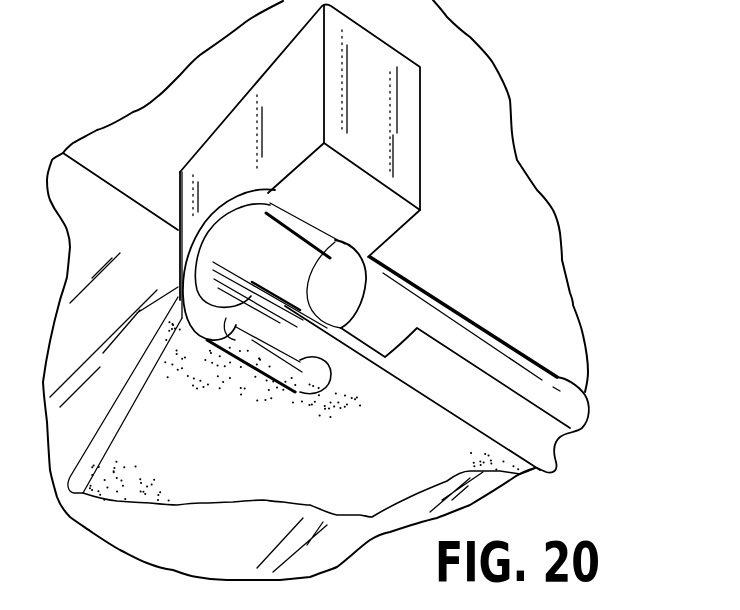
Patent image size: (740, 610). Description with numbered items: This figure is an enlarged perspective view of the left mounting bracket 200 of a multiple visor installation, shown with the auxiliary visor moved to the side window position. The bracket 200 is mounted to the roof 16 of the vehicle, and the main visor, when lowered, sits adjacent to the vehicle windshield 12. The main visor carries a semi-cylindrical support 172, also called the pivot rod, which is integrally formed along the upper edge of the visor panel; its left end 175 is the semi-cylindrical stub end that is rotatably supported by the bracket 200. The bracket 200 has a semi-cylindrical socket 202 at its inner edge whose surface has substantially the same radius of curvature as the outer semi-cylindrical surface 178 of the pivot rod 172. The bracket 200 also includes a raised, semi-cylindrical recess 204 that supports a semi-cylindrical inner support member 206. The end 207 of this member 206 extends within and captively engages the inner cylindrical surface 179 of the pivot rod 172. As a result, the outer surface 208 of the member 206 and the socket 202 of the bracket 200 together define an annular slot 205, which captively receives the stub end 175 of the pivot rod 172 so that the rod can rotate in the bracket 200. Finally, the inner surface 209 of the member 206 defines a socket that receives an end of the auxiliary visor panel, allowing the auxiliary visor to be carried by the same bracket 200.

The vehicle windshield 12 is at (250, 550).
The roof 16 is at (478, 152).
The semi-cylindrical support 172 is at (472, 347).
The left end 175 is at (380, 262).
The outer semi-cylindrical surface 178 is at (457, 337).
The inner cylindrical surface 179 is at (352, 299).
The left mounting bracket 200 is at (215, 137).
The semi-cylindrical socket 202 is at (289, 392).
The raised semi-cylindrical recess 204 is at (264, 370).
The annular slot 205 is at (330, 358).
The inner support member 206 is at (246, 233).
The end 207 is at (334, 240).
The outer surface 208 is at (251, 318).
The inner surface 209 is at (226, 246).